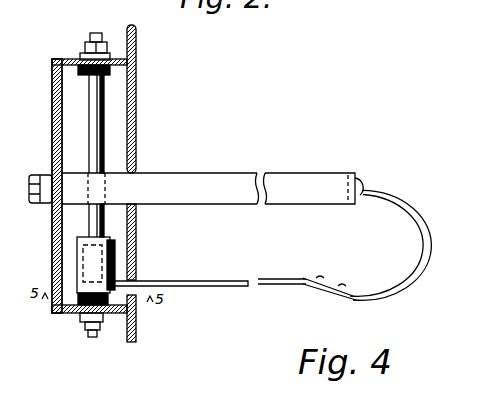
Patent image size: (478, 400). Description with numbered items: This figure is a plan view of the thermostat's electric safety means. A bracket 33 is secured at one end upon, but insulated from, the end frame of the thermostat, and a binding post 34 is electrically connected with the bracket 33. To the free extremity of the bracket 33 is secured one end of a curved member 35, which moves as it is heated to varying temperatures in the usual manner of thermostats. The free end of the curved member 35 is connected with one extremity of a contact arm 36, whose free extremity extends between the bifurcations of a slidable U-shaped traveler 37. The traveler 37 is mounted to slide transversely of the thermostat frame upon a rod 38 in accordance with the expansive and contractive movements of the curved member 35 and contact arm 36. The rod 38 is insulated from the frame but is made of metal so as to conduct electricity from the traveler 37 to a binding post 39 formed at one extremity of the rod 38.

The bracket 33 is at (183, 178).
The binding post 34 is at (34, 174).
The curved member 35 is at (418, 238).
The contact arm 36 is at (218, 280).
The U-shaped traveler 37 is at (95, 263).
The rod 38 is at (105, 110).
The binding post 39 is at (87, 43).